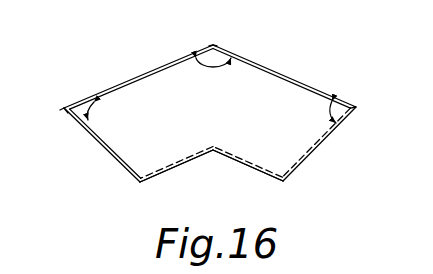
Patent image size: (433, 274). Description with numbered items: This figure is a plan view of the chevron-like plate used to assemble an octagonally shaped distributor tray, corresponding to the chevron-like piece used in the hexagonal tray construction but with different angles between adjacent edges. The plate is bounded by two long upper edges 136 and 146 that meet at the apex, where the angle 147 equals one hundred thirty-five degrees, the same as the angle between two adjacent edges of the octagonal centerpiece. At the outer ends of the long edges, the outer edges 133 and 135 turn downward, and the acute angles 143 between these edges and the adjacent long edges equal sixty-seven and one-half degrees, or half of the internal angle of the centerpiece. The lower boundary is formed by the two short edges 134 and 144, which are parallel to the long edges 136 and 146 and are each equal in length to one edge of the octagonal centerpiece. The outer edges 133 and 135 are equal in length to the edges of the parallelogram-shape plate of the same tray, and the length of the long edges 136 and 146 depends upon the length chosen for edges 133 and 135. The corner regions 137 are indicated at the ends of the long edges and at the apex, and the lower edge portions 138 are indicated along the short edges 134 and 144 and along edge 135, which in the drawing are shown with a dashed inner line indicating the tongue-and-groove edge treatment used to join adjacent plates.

The edge 133 is at (110, 155).
The edge 134 is at (170, 180).
The edge 135 is at (343, 130).
The edge 136 is at (180, 62).
The corner 137 is at (80, 127).
The lower edge 138 is at (183, 164).
The acute angle 143 is at (95, 115).
The edge 144 is at (281, 183).
The edge 146 is at (287, 78).
The angle at the apex 147 is at (206, 72).